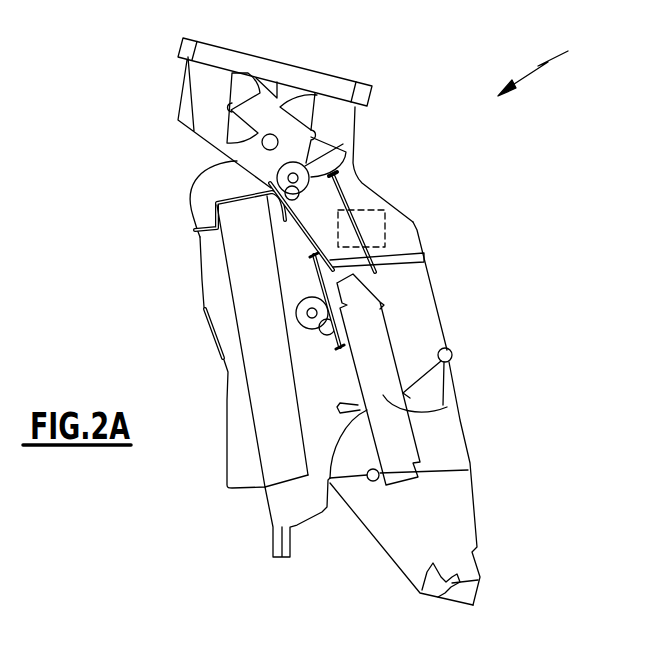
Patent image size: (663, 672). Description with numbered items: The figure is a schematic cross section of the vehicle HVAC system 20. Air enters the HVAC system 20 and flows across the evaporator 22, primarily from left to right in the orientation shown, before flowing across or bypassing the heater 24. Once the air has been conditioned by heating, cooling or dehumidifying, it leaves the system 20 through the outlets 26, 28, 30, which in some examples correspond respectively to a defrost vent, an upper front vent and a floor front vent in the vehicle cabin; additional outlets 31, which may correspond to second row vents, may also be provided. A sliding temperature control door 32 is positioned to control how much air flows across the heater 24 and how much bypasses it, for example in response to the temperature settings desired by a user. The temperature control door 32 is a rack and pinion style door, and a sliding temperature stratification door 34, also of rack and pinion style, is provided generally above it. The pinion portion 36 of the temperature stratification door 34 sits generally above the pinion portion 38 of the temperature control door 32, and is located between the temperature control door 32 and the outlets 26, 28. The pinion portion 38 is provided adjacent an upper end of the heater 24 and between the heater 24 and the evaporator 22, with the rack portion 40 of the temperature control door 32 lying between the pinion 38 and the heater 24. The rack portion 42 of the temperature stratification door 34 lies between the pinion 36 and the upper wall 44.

The HVAC system 20 is at (551, 65).
The evaporator 22 is at (278, 441).
The heater 24 is at (448, 406).
The outlet 26 is at (223, 57).
The outlet 28 is at (333, 85).
The outlet 30 is at (376, 228).
The additional outlets 31 is at (446, 602).
The sliding temperature control door 32 is at (421, 257).
The sliding temperature stratification door 34 is at (340, 192).
The pinion portion 36 is at (335, 148).
The pinion portion 38 is at (307, 314).
The rack portion 40 is at (338, 341).
The rack portion 42 is at (286, 219).
The upper wall 44 is at (191, 187).